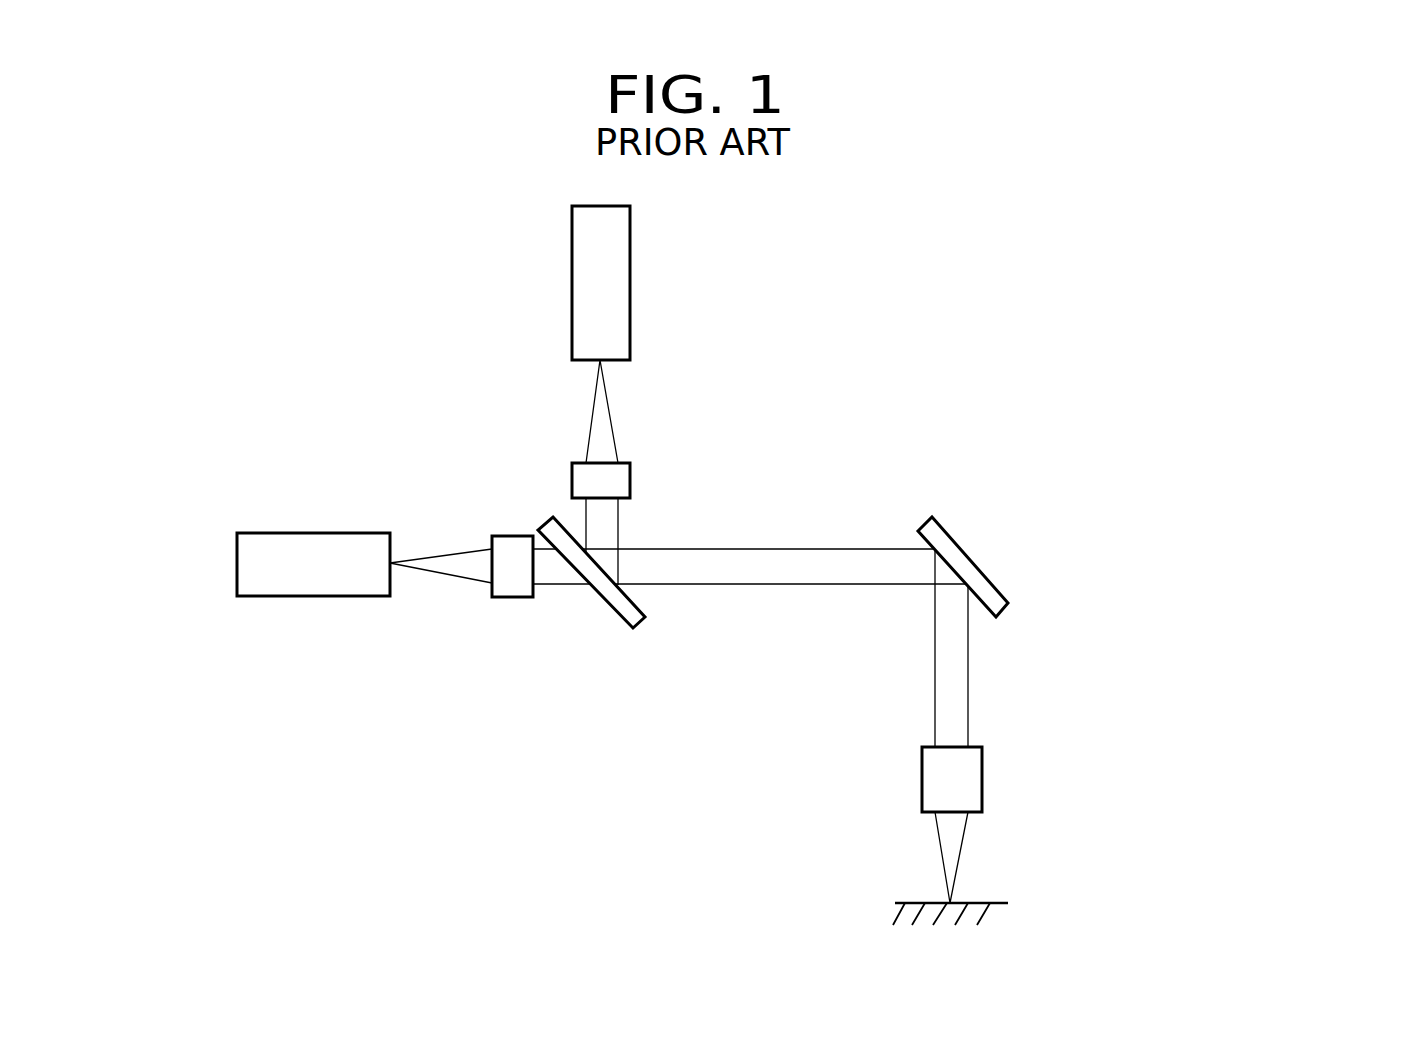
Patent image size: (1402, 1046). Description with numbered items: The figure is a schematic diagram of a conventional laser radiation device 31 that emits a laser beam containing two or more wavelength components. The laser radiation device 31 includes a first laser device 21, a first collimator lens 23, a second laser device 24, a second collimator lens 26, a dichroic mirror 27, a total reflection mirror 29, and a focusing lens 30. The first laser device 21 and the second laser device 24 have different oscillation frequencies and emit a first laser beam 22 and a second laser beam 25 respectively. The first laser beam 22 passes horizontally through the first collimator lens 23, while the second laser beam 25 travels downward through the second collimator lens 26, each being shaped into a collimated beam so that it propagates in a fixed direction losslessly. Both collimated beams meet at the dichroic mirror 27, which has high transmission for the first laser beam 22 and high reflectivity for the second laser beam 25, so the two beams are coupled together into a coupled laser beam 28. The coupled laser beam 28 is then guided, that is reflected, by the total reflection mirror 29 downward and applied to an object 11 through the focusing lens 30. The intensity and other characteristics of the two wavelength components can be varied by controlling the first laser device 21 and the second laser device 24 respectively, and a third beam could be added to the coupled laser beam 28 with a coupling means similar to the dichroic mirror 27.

The object 11 is at (967, 902).
The first laser device 21 is at (237, 565).
The first laser beam 22 is at (438, 575).
The first collimator lens 23 is at (512, 535).
The second laser device 24 is at (630, 270).
The second laser beam 25 is at (610, 410).
The second collimator lens 26 is at (630, 475).
The dichroic mirror 27 is at (590, 592).
The coupled laser beam 28 is at (650, 587).
The total reflection mirror 29 is at (932, 516).
The focusing lens 30 is at (982, 775).
The laser radiation device 31 is at (992, 218).